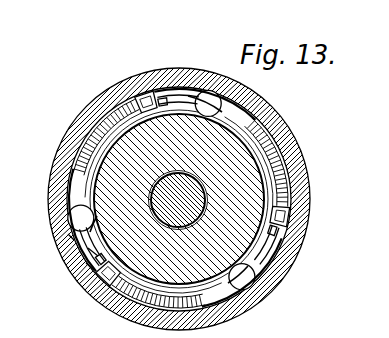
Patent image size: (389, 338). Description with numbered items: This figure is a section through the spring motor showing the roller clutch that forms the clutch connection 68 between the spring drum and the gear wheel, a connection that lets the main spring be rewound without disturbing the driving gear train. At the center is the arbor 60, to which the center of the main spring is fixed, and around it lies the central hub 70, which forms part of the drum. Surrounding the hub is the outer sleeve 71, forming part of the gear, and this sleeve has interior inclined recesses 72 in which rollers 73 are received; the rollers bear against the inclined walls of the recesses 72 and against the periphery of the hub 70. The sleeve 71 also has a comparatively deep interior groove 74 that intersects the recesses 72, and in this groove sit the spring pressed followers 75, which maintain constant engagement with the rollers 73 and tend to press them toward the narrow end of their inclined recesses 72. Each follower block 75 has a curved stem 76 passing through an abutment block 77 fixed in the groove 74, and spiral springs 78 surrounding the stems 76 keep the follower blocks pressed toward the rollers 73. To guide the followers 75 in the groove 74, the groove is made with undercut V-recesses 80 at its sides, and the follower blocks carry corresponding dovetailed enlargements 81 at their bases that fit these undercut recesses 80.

The arbor 60 is at (157, 206).
The clutch connection 68 is at (83, 243).
The central hub 70 is at (158, 87).
The outer sleeve 71 is at (97, 287).
The inclined recesses 72 is at (177, 93).
The rollers 73 is at (161, 189).
The interior groove 74 is at (80, 259).
The spring pressed followers 75 is at (62, 163).
The curved stem 76 is at (56, 113).
The abutment block 77 is at (132, 86).
The spiral springs 78 is at (98, 110).
The undercut V-recesses 80 is at (62, 231).
The dovetailed enlargements 81 is at (238, 92).